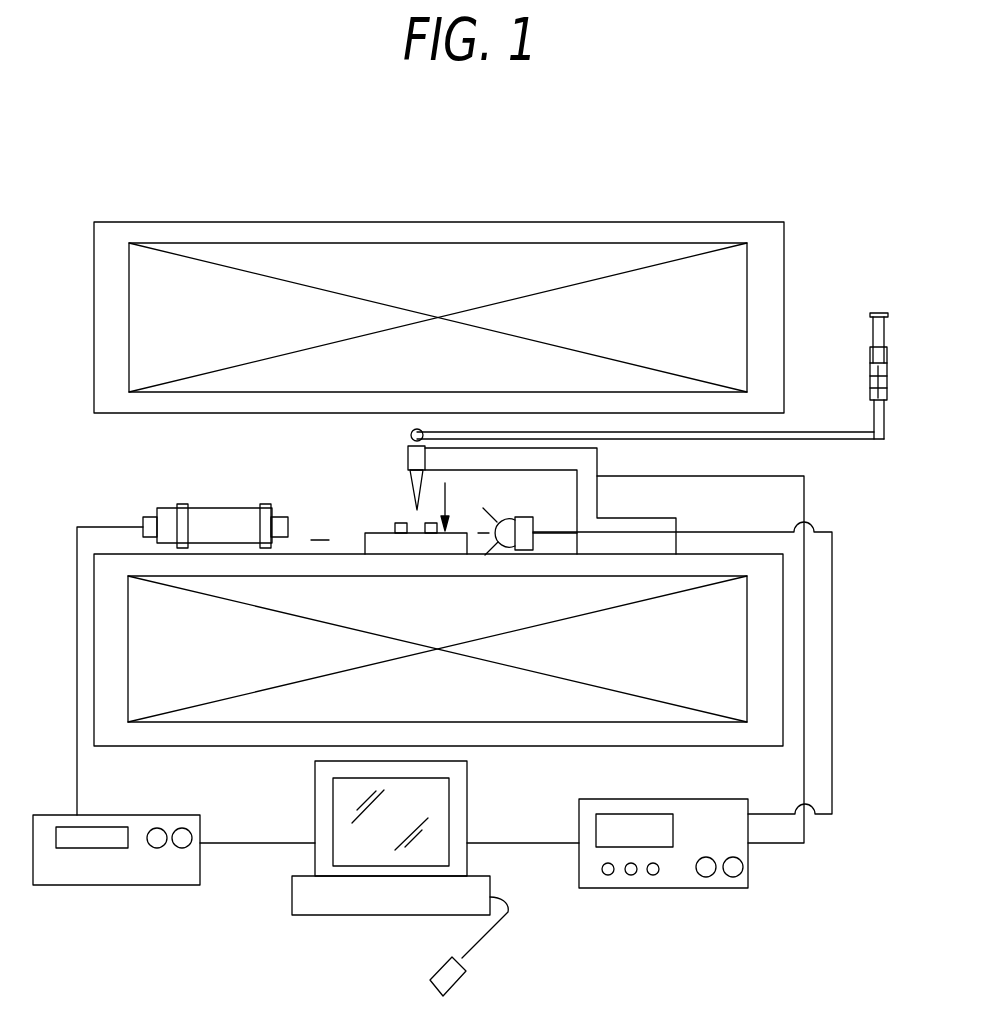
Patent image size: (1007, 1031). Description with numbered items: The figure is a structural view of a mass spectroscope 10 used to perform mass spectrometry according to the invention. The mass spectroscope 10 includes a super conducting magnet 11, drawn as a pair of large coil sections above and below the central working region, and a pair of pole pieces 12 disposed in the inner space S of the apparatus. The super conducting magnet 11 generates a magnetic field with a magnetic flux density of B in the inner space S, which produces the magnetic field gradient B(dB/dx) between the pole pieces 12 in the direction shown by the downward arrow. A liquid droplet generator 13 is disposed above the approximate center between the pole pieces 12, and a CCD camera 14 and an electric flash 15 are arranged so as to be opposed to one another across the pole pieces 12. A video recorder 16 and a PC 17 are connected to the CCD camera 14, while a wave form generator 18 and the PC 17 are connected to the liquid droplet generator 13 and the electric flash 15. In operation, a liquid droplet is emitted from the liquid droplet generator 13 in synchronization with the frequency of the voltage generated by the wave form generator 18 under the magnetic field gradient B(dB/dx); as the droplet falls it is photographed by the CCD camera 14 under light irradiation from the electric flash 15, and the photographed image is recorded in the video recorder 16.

The mass spectroscope 10 is at (692, 165).
The super conducting magnet 11 is at (507, 221).
The pole pieces 12 is at (395, 523).
The liquid droplet generator 13 is at (413, 502).
The CCD camera 14 is at (182, 502).
The electric flash 15 is at (530, 520).
The video recorder 16 is at (88, 885).
The PC 17 is at (340, 915).
The wave form generator 18 is at (675, 888).